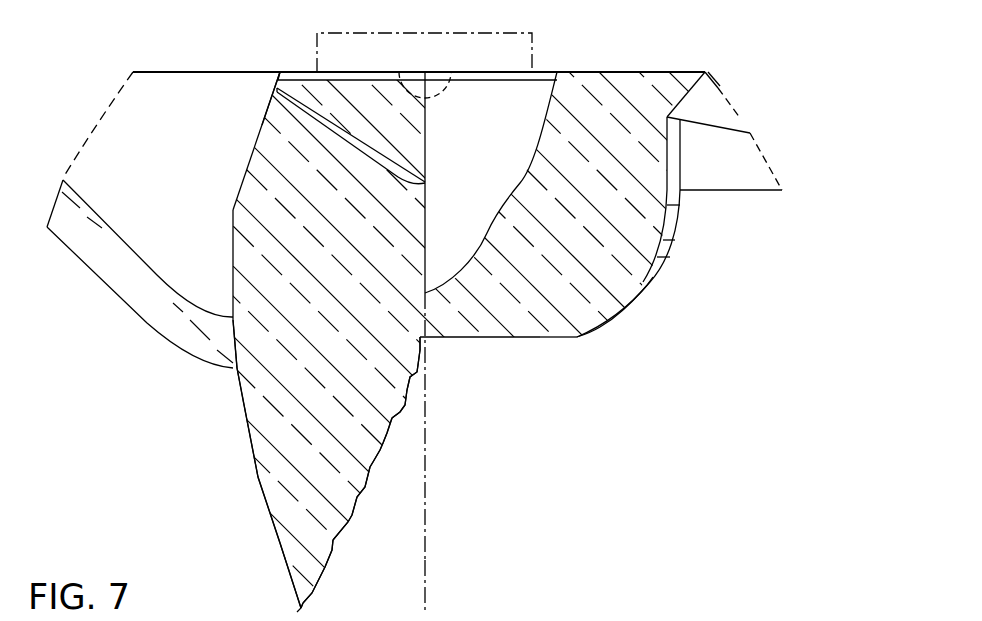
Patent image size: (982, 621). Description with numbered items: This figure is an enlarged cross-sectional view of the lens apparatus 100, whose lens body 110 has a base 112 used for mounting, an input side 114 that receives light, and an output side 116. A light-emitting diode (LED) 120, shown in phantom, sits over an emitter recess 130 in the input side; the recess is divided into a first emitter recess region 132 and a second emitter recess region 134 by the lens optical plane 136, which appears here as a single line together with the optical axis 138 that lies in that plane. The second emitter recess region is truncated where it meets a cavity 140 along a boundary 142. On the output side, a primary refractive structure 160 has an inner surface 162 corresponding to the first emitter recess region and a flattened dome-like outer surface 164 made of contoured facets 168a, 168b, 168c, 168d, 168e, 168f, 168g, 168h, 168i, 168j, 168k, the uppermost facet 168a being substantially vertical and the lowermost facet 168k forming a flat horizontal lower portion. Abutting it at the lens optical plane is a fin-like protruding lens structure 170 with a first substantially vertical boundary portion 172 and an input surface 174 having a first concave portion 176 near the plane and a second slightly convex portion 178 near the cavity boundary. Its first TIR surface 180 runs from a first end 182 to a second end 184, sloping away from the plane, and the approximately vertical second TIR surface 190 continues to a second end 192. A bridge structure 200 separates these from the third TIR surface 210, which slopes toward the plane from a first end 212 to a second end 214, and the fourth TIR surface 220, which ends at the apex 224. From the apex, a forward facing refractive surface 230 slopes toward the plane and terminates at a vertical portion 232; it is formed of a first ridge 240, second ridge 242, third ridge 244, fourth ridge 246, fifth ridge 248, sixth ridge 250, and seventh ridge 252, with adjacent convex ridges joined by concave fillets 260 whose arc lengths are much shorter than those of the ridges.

The lens apparatus 100 is at (735, 65).
The lens body 110 is at (692, 72).
The base 112 is at (738, 117).
The input side 114 is at (619, 55).
The output side 116 is at (503, 397).
The light-emitting diode (LED) 120 is at (518, 53).
The emitter recess 130 is at (352, 112).
The first emitter recess region 132 is at (537, 98).
The second emitter recess region 134 is at (288, 92).
The lens optical plane 136 is at (427, 552).
The optical axis 138 is at (427, 602).
The cavity 140 is at (173, 100).
The boundary 142 is at (278, 83).
The primary refractive structure 160 is at (640, 370).
The inner surface 162 is at (503, 197).
The outer surface 164 is at (670, 165).
The uppermost facet 168a is at (678, 207).
The contoured facet 168b is at (666, 240).
The contoured facet 168c is at (668, 257).
The contoured facet 168d is at (663, 275).
The contoured facet 168e is at (655, 287).
The contoured facet 168f is at (640, 300).
The contoured facet 168g is at (622, 313).
The contoured facet 168h is at (597, 328).
The contoured facet 168i is at (577, 338).
The contoured facet 168j is at (555, 337).
The lowermost facet 168k is at (480, 338).
The protruding lens structure 170 is at (208, 510).
The first substantially vertical boundary portion 172 is at (425, 153).
The input surface 174 is at (352, 142).
The first concave portion 176 is at (400, 177).
The second slightly convex portion 178 is at (317, 123).
The first total internal reflection (TIR) surface 180 is at (252, 148).
The first end 182 is at (277, 93).
The second end 184 is at (233, 207).
The second TIR surface 190 is at (233, 260).
The second end 192 is at (228, 317).
The bridge structure 200 is at (108, 292).
The third TIR surface 210 is at (247, 423).
The first end 212 is at (237, 368).
The second end 214 is at (257, 477).
The fourth TIR surface 220 is at (280, 543).
The apex 224 is at (297, 612).
The forward facing refractive surface 230 is at (384, 516).
The vertical portion 232 is at (423, 350).
The first ridge 240 is at (318, 592).
The second ridge 242 is at (333, 545).
The third ridge 244 is at (352, 520).
The fourth ridge 246 is at (365, 487).
The fifth ridge 248 is at (375, 452).
The sixth ridge 250 is at (400, 407).
The seventh ridge 252 is at (413, 382).
The concave fillet 260 is at (370, 468).